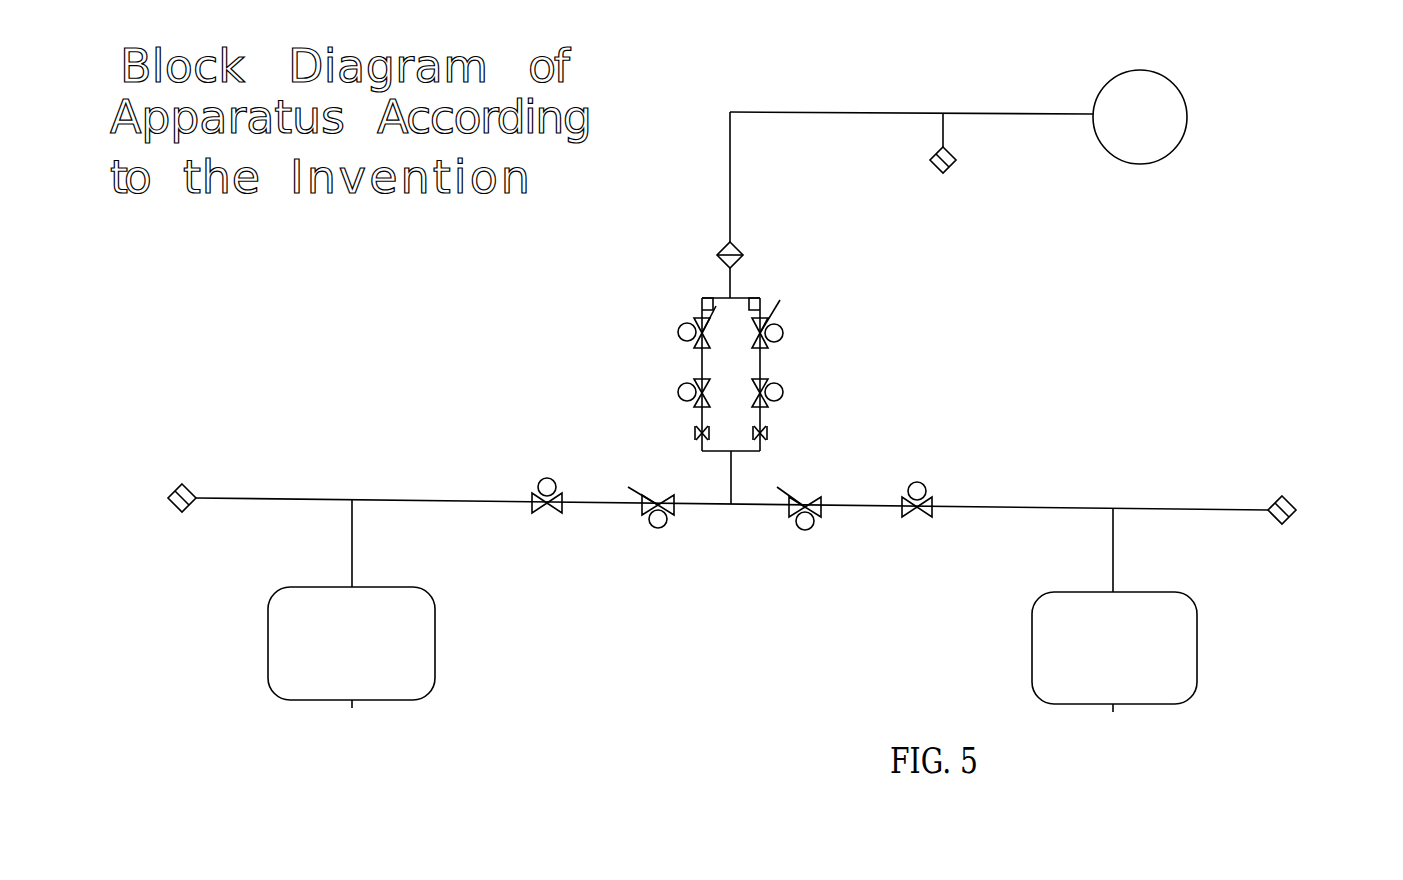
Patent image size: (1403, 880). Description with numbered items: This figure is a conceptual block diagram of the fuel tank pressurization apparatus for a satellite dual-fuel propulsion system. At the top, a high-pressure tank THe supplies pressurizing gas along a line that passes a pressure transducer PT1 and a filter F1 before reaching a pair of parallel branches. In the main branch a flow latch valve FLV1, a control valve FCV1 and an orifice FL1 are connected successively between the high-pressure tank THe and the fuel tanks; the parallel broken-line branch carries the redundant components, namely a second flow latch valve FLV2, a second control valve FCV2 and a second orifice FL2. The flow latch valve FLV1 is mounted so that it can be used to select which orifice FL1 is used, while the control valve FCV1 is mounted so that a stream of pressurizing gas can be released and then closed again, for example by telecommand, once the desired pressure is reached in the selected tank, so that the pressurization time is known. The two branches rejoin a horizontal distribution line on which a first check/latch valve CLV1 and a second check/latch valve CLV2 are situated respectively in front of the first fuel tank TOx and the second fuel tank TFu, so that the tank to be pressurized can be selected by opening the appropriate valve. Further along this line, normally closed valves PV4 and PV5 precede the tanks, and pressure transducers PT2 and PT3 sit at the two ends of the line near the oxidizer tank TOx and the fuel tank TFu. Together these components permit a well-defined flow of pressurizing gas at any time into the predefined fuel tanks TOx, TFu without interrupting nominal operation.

The high-pressure tank THe is at (1140, 117).
The pressure transducer 1 PT1 is at (977, 162).
The filter 1 F1 is at (706, 254).
The flow latch valve FLV1 is at (654, 327).
The flow latch valve FLV2 is at (811, 327).
The control valve FCV1 is at (651, 394).
The control valve FCV2 is at (812, 394).
The orifice FL1 is at (667, 432).
The orifice FL2 is at (796, 432).
The pressure transducer 2 PT2 is at (138, 497).
The pressure transducer 3 PT3 is at (1325, 514).
The pyro valve 4 (normally closed) PV4 is at (552, 533).
The pyro valve 5 (normally closed) PV5 is at (922, 535).
The check/latch valve CLV1 is at (808, 531).
The check/latch valve CLV2 is at (660, 531).
The first fuel tank TOx is at (351, 647).
The second fuel tank TFu is at (1114, 652).